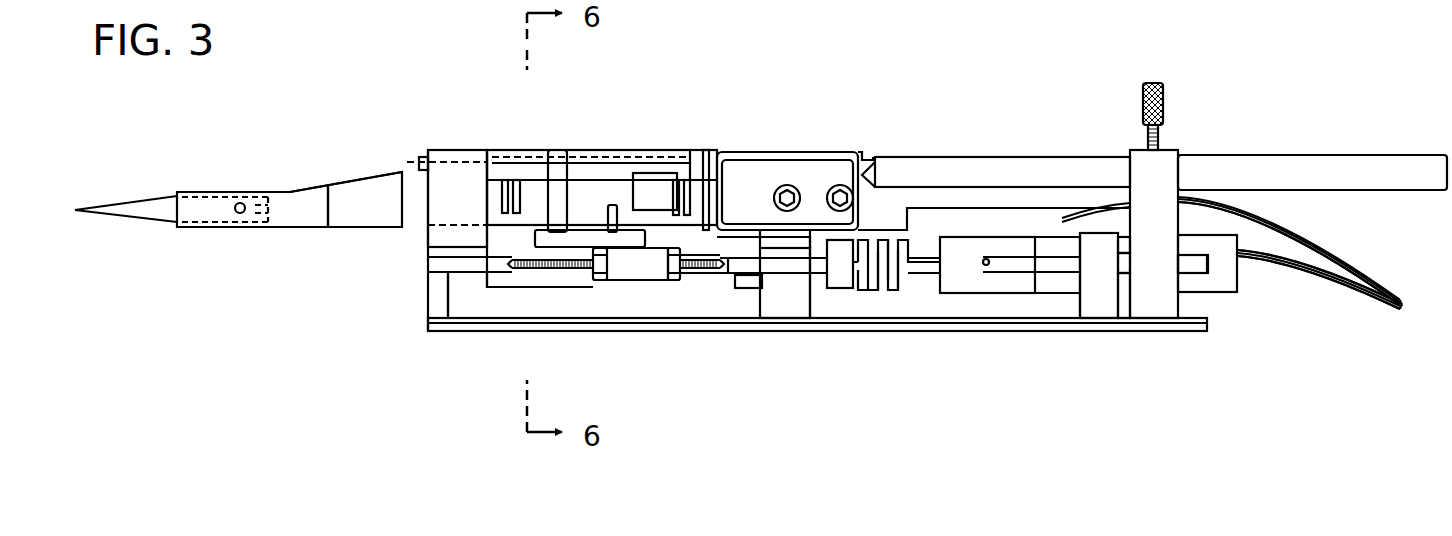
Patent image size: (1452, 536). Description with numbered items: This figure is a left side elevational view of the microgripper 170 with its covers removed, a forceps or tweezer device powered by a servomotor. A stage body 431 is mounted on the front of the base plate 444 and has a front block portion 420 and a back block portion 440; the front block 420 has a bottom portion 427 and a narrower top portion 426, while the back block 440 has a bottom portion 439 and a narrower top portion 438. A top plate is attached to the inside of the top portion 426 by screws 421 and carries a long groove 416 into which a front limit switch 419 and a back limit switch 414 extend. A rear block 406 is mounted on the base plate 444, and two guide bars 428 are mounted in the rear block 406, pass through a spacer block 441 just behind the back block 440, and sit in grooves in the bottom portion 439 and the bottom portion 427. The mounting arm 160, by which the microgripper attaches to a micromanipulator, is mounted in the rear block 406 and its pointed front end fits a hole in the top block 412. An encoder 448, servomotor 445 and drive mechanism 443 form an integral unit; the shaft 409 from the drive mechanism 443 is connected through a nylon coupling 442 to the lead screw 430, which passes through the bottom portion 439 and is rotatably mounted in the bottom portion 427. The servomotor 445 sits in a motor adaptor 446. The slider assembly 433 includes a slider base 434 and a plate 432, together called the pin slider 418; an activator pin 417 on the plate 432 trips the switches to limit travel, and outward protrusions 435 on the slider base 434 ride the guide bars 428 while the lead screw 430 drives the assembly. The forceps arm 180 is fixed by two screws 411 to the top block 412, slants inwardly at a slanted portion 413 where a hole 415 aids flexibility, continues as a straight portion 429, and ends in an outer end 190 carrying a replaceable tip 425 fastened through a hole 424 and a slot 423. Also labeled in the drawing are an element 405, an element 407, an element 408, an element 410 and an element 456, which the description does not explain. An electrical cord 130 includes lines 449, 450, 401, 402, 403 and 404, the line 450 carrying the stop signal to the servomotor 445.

The electrical cord 130 is at (1352, 275).
The mounting arm 160 is at (1312, 160).
The microgripper 170 is at (940, 142).
The forceps arm 180 is at (363, 197).
The outer end 190 is at (313, 188).
The line 401 is at (1318, 240).
The line 402 is at (1289, 253).
The line 403 is at (1336, 265).
The line 404 is at (1318, 282).
The wire bundle 405 is at (1240, 200).
The rear block 406 is at (1165, 160).
The knurled thumb screw 407 is at (1165, 103).
The guide rod 408 is at (1038, 182).
The shaft 409 is at (958, 185).
The end block 410 is at (885, 178).
The screws 411 is at (787, 185).
The top block 412 is at (738, 165).
The slanted portion 413 is at (706, 180).
The back limit switch 414 is at (680, 195).
The hole 415 is at (645, 190).
The long groove 416 is at (622, 160).
The activator pin 417 is at (612, 210).
The pin slider 418 is at (560, 170).
The front limit switch 419 is at (505, 195).
The front block portion 420 is at (452, 180).
The screws 421 is at (420, 165).
The slot 423 is at (268, 195).
The hole 424 is at (238, 202).
The replaceable tip 425 is at (127, 195).
The top portion 426 is at (437, 210).
The bottom portion 427 is at (437, 295).
The guide bars 428 is at (447, 300).
The straight portion 429 is at (530, 200).
The lead screw 430 is at (537, 272).
The stage body 431 is at (537, 313).
The plate 432 is at (582, 247).
The slider assembly 433 is at (638, 265).
The slider base 434 is at (652, 278).
The protrusions 435 is at (680, 275).
The top portion 438 is at (790, 290).
The bottom portion 439 is at (815, 292).
The back block portion 440 is at (805, 298).
The spacer block 441 is at (845, 297).
The nylon coupling 442 is at (895, 300).
The drive mechanism 443 is at (963, 293).
The base plate 444 is at (1003, 325).
The servomotor 445 is at (1058, 293).
The motor adaptor 446 is at (1105, 295).
The encoder 448 is at (1235, 293).
The line 449 is at (1348, 308).
The line 450 is at (1318, 276).
The shaft bearing 456 is at (762, 290).